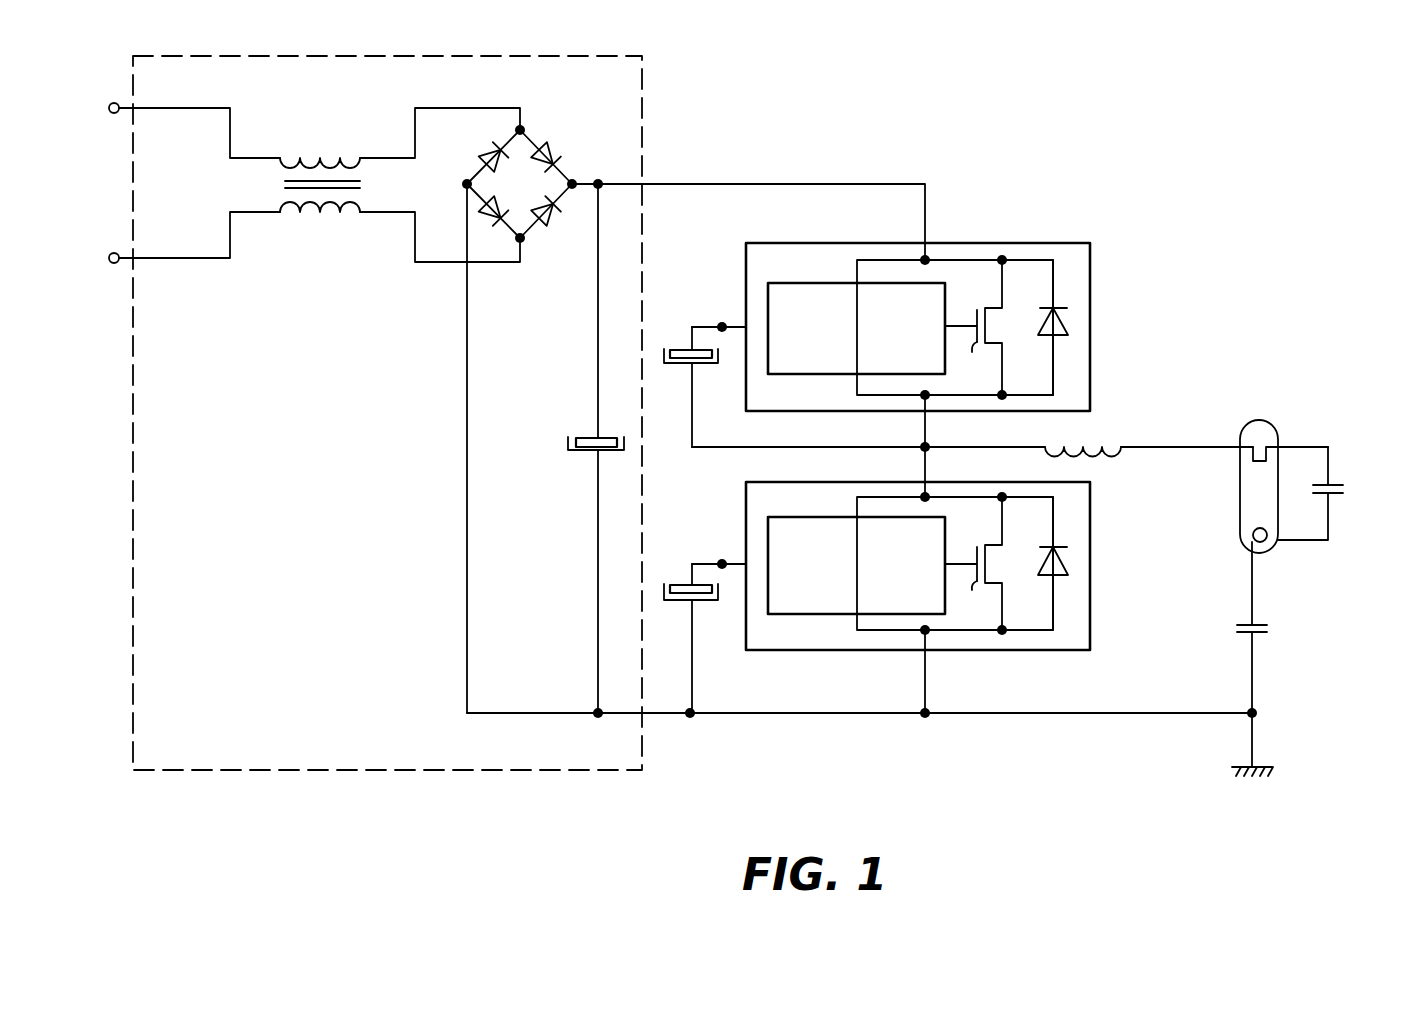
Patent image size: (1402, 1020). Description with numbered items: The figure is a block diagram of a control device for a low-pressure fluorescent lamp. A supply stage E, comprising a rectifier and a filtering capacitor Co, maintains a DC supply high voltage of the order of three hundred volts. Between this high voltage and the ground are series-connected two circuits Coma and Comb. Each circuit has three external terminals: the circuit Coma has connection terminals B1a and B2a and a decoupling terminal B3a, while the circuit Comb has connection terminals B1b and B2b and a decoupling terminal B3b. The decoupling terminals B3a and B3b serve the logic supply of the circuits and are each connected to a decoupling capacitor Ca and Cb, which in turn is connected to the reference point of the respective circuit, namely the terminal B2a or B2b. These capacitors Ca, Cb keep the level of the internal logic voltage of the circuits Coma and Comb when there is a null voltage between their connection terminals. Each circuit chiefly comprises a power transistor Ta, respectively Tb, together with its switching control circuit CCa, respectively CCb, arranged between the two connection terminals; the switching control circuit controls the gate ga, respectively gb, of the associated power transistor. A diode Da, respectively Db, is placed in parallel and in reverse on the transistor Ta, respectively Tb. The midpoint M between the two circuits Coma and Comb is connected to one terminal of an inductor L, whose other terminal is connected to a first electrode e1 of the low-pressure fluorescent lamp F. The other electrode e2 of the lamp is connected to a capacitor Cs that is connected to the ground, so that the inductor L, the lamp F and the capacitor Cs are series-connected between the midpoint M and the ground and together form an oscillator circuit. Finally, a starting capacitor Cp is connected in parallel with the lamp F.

The supply stage E is at (502, 770).
The filtering capacitor Co is at (584, 452).
The first circuit Coma is at (918, 325).
The second circuit Comb is at (961, 585).
The switching control circuit CCa is at (820, 283).
The switching control circuit CCb is at (820, 517).
The power transistor Ta is at (988, 318).
The power transistor Tb is at (988, 555).
The diode Da is at (1043, 322).
The diode Db is at (1043, 560).
The gate ga is at (967, 357).
The gate gb is at (967, 594).
The connection terminal B1a is at (925, 260).
The connection terminal B2a is at (925, 395).
The decoupling terminal B3a is at (722, 327).
The connection terminal B1b is at (925, 497).
The connection terminal B2b is at (925, 630).
The decoupling terminal B3b is at (722, 564).
The decoupling capacitor Ca is at (700, 365).
The decoupling capacitor Cb is at (700, 603).
The midpoint M is at (925, 447).
The inductor L is at (1149, 437).
The low-pressure fluorescent lamp F is at (1275, 465).
The first electrode e1 is at (1287, 467).
The second electrode e2 is at (1259, 528).
The starting capacitor Cp is at (1337, 487).
The capacitor Cs is at (1263, 627).